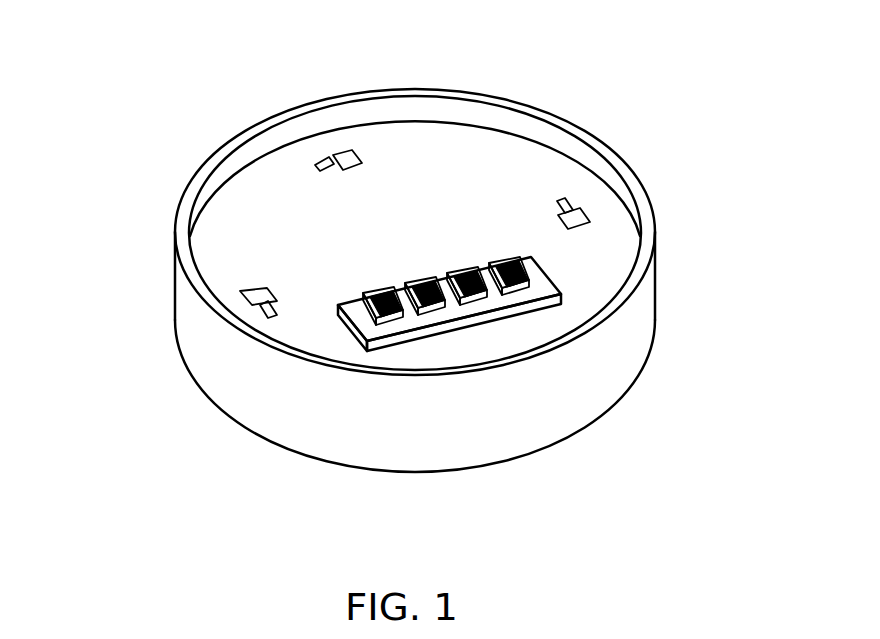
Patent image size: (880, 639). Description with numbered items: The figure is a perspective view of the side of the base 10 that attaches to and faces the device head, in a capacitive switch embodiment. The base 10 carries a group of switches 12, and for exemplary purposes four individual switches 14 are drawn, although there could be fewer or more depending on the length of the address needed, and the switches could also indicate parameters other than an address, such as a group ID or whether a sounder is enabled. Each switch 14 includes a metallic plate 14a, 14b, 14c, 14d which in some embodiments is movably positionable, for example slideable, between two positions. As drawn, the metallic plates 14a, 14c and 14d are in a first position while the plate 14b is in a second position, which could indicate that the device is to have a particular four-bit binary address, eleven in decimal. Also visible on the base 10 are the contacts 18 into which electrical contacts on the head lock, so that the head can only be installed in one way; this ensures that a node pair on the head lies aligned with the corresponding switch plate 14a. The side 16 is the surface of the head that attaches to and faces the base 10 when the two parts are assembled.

The base 10 is at (288, 413).
The group of switches 12 is at (338, 305).
The switch 14 is at (563, 285).
The metallic plate 14a is at (393, 324).
The metallic plate 14b is at (440, 312).
The metallic plate 14c is at (480, 302).
The metallic plate 14d is at (531, 278).
The side 16 is at (291, 197).
The contacts 18 is at (342, 152).